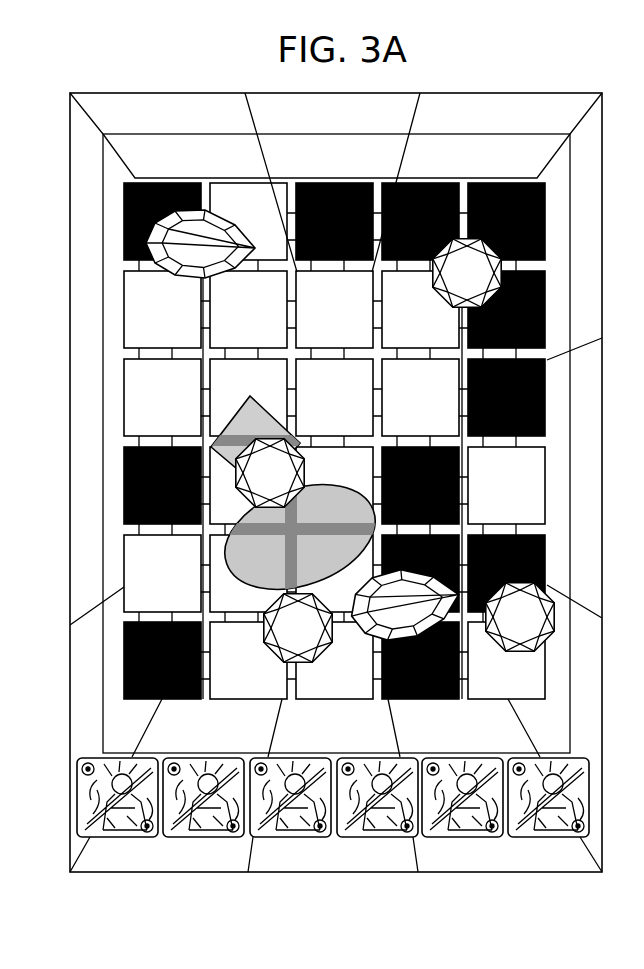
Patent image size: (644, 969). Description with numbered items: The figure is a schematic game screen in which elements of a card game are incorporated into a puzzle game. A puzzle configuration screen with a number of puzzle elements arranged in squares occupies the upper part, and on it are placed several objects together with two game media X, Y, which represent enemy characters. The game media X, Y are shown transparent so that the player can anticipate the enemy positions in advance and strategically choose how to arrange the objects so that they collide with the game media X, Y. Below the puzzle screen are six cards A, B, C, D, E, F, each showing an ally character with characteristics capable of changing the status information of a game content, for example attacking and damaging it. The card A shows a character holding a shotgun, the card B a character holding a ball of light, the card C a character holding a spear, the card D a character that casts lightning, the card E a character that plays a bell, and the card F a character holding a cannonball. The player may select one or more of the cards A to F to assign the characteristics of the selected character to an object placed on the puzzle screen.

The game medium X is at (262, 426).
The game medium Y is at (262, 563).
The card A is at (110, 837).
The card B is at (200, 837).
The card C is at (278, 837).
The card D is at (378, 837).
The card E is at (455, 837).
The card F is at (540, 837).